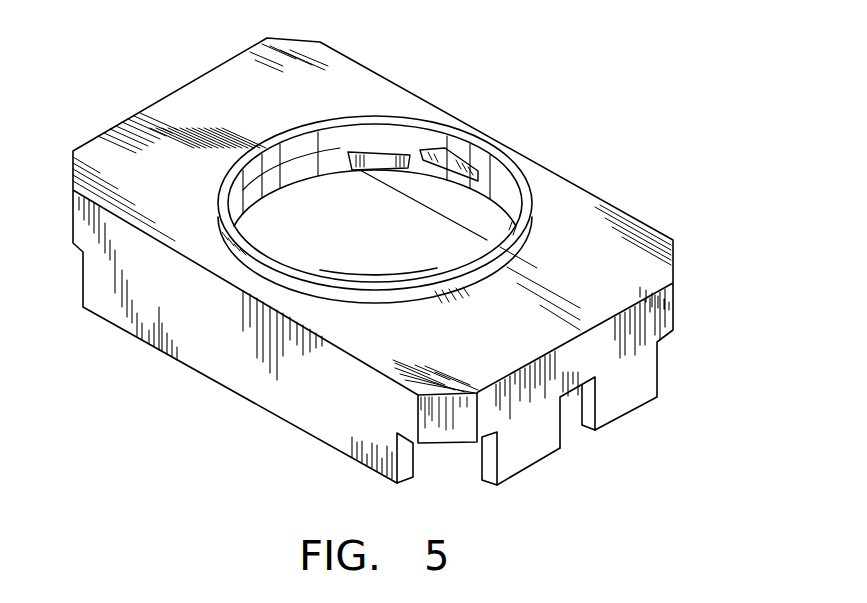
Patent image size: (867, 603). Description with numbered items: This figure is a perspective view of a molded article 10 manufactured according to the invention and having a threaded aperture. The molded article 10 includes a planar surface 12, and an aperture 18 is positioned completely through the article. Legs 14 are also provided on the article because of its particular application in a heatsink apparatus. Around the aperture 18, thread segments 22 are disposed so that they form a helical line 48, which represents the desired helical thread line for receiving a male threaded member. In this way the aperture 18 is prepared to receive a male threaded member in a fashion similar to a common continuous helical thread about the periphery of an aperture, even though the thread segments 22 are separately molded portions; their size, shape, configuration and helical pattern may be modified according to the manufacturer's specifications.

The molded article 10 is at (636, 220).
The planar surface 12 is at (580, 283).
The legs 14 is at (420, 187).
The aperture 18 is at (308, 218).
The thread segments 22 is at (390, 182).
The helical line 48 is at (334, 134).